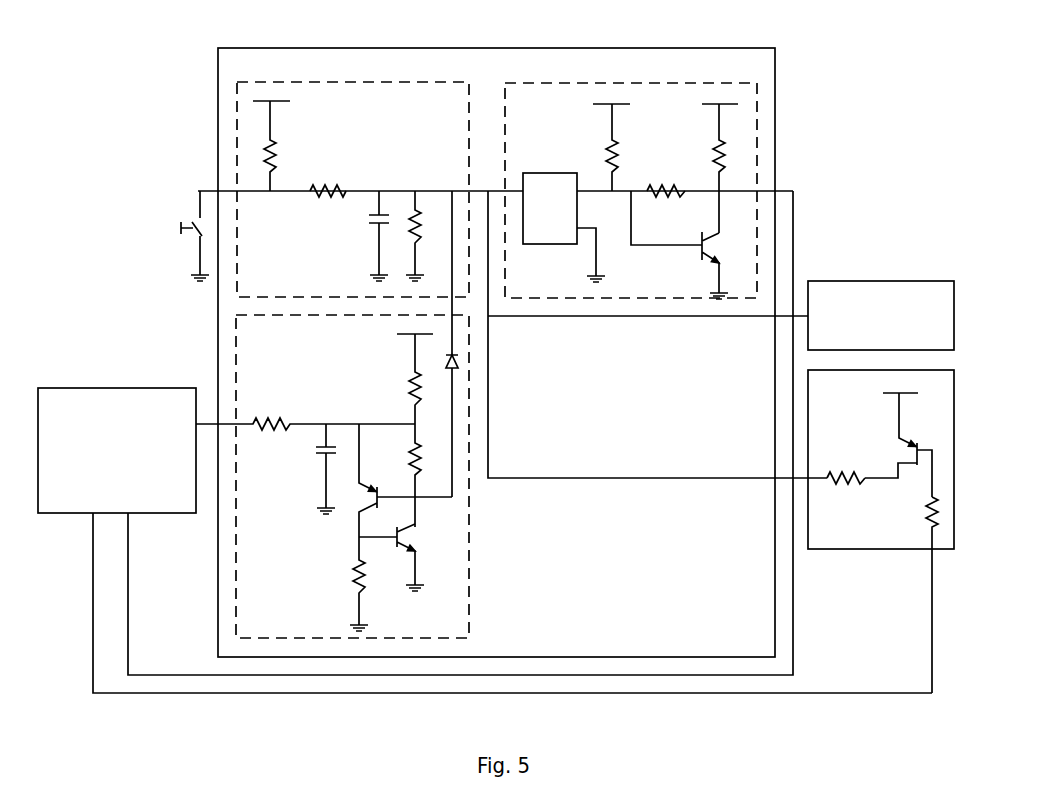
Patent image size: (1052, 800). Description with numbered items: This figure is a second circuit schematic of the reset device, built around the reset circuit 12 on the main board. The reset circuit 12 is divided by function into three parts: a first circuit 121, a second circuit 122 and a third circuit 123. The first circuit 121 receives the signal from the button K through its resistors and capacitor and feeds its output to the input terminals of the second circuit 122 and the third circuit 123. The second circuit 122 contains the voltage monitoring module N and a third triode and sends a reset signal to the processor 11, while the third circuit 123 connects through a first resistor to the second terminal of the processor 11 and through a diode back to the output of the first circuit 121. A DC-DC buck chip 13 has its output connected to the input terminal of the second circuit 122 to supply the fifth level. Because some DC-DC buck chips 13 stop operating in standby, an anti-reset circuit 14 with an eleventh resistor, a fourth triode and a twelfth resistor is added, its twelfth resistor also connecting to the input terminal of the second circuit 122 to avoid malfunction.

The processor 11 is at (110, 388).
The reset circuit 12 is at (498, 48).
The DC-DC buck chip 13 is at (883, 281).
The anti-reset circuit 14 is at (883, 370).
The first circuit 121 is at (350, 81).
The second circuit 122 is at (623, 82).
The third circuit 123 is at (469, 530).